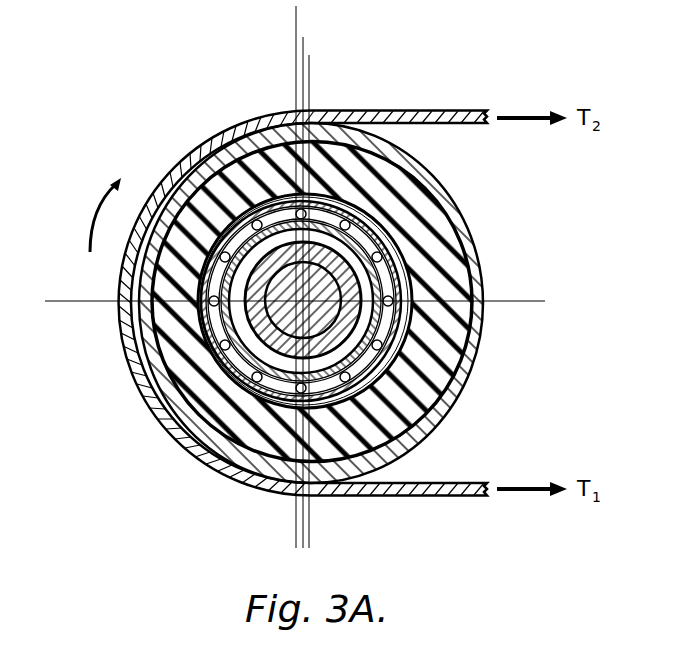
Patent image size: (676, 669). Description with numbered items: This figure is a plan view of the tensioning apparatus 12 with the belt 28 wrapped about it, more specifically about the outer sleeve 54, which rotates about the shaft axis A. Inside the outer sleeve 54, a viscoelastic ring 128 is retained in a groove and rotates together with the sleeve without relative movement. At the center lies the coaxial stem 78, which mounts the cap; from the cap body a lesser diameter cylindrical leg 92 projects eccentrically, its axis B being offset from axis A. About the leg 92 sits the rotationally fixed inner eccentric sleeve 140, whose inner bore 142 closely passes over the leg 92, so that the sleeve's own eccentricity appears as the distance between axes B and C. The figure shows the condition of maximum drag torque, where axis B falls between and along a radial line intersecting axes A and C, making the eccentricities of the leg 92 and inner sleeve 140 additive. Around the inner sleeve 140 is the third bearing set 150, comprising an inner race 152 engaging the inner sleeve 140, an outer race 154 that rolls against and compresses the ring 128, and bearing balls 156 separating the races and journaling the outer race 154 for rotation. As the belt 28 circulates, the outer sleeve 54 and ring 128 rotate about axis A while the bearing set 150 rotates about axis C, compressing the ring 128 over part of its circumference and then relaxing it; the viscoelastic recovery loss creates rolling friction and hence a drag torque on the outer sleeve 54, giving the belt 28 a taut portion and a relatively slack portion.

The tensioning apparatus 12 is at (230, 66).
The belt 28 is at (445, 110).
The outer sleeve 54 is at (340, 295).
The stem 78 is at (242, 446).
The leg 92 is at (222, 360).
The viscoelastic ring 128 is at (478, 289).
The inner eccentric sleeve 140 is at (445, 273).
The inner bore 142 is at (238, 220).
The third bearing set 150 is at (400, 290).
The inner race 152 is at (378, 349).
The outer race 154 is at (410, 414).
The bearing balls 156 is at (215, 345).
The axis A is at (425, 205).
The axis B is at (425, 412).
The axis C is at (190, 432).